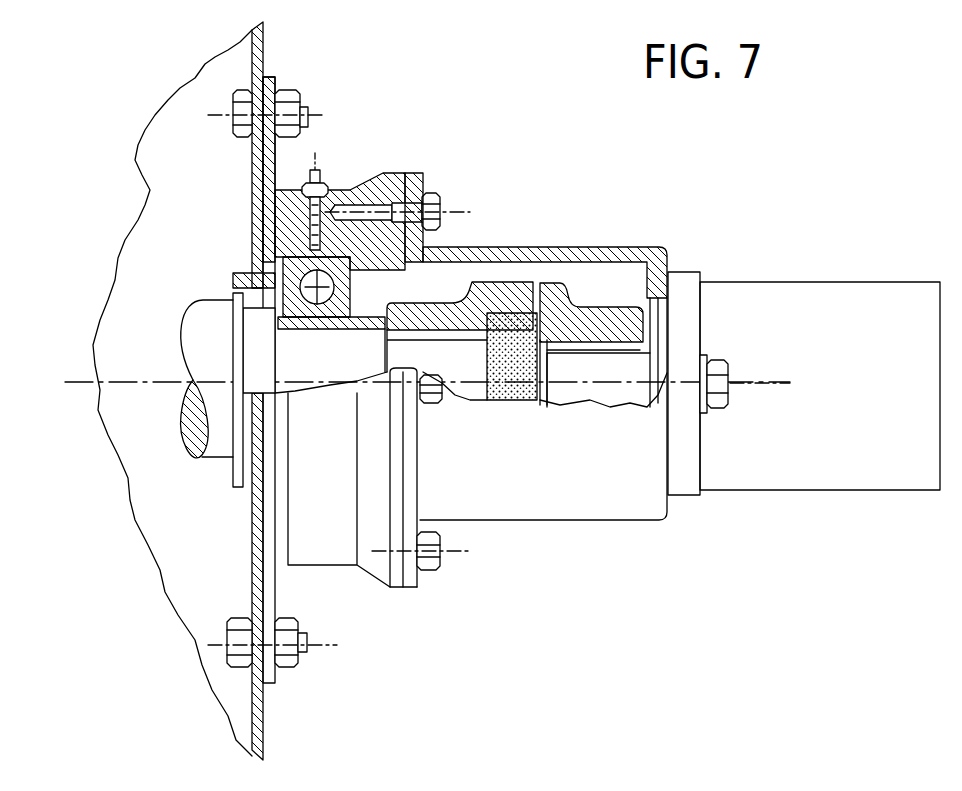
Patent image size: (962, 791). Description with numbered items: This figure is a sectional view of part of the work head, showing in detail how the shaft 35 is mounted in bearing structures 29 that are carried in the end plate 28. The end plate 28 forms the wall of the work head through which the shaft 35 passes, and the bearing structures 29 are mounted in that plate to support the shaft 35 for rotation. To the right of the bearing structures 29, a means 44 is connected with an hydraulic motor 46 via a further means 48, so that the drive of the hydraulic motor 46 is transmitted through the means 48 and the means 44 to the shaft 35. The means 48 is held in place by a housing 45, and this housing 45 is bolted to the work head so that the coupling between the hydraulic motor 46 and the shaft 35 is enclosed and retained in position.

The end plate 28 is at (261, 702).
The bearing structures 29 is at (340, 168).
The shaft 35 is at (196, 428).
The means 44 is at (498, 298).
The housing 45 is at (600, 247).
The hydraulic motor 46 is at (808, 473).
The means 48 is at (578, 334).